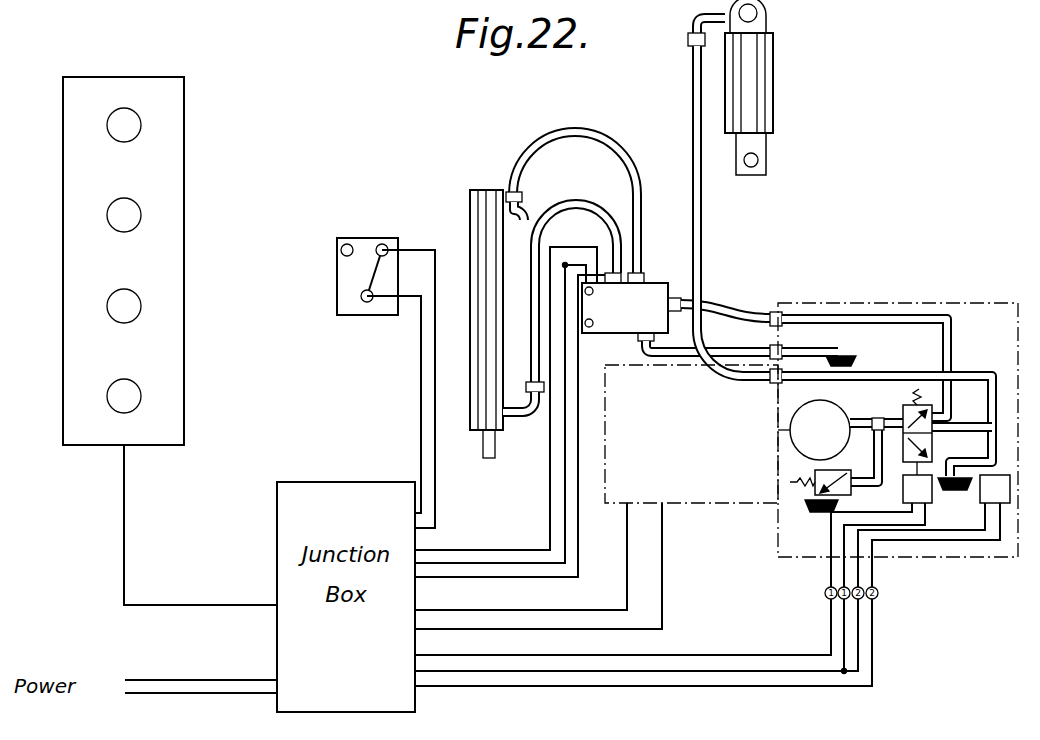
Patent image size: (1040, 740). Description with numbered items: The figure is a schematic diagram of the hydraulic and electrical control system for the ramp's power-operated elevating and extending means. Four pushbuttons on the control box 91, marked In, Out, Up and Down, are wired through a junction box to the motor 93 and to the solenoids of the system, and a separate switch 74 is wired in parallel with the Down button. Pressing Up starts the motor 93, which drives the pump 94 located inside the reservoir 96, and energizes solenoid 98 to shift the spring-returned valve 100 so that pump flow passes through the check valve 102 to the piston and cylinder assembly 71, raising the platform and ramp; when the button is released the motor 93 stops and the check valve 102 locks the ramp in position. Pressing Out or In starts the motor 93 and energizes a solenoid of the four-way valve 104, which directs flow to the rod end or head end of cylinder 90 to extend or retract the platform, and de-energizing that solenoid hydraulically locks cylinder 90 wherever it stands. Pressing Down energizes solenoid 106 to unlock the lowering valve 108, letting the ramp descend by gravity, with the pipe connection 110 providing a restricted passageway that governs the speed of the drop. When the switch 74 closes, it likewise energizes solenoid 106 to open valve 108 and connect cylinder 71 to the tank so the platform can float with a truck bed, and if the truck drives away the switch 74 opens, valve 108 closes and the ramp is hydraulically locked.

The control box 91 is at (172, 160).
The switch 74 is at (373, 245).
The cylinder 90 is at (485, 200).
The piston and cylinder assembly 71 is at (752, 107).
The pipe connection 110 is at (688, 44).
The four-way valve 104 is at (656, 296).
The reservoir 96 is at (968, 303).
The check valve 102 is at (896, 397).
The pump 94 is at (833, 418).
The lowering valve 108 is at (985, 428).
The valve 100 is at (905, 450).
The solenoid 98 is at (931, 506).
The solenoid 106 is at (1000, 506).
The motor 93 is at (712, 488).